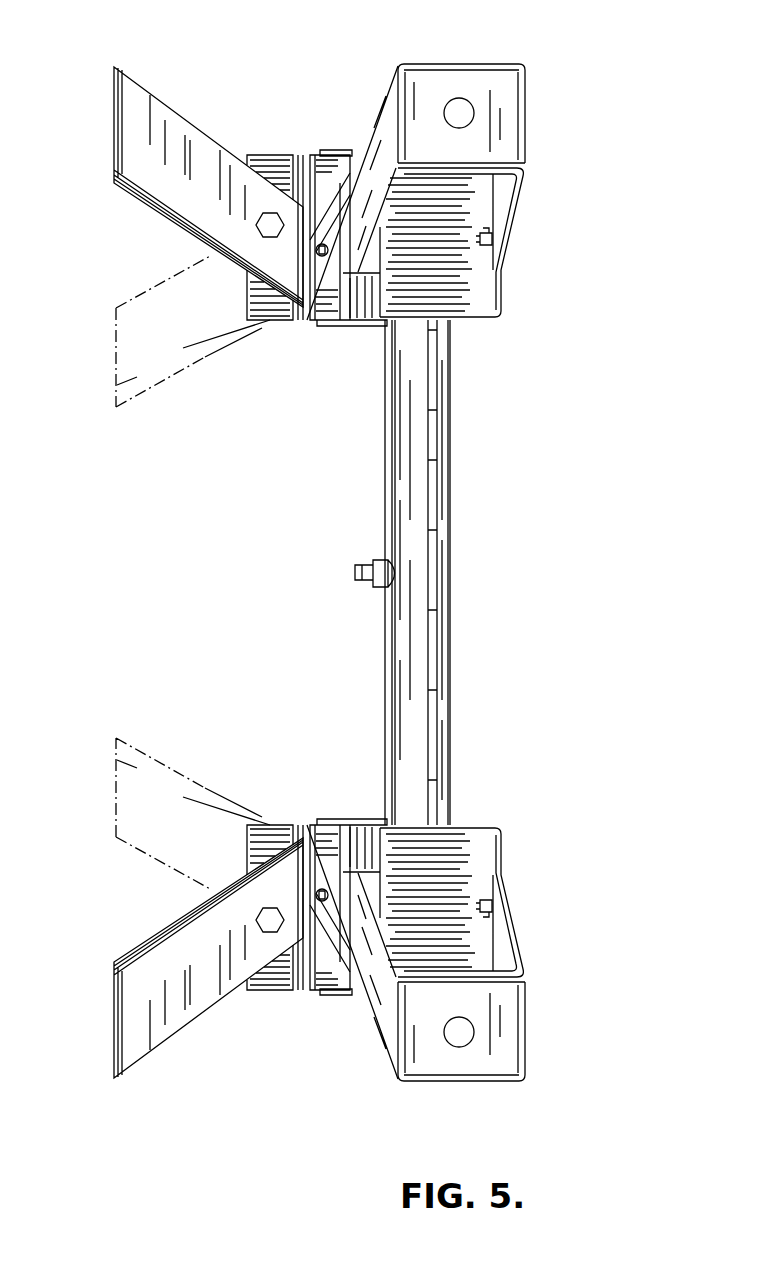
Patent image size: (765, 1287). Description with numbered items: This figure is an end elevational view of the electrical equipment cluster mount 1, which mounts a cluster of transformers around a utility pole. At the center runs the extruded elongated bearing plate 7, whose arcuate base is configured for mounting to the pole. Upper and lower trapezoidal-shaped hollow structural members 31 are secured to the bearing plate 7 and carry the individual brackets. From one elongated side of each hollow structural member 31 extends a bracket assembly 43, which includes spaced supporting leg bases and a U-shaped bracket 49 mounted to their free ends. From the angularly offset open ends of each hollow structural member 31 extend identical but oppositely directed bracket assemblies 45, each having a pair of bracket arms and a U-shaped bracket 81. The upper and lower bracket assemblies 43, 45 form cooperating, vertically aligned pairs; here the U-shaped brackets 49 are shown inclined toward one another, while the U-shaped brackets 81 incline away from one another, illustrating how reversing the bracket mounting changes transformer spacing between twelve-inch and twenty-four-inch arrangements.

The electrical equipment cluster mount 1 is at (346, 548).
The elongated bearing plate 7 is at (386, 640).
The hollow structural member 31 is at (339, 149).
The bracket assembly 43 is at (165, 238).
The bracket assembly 45 is at (542, 191).
The U-shaped bracket 49 is at (144, 118).
The U-shaped bracket 81 is at (484, 139).